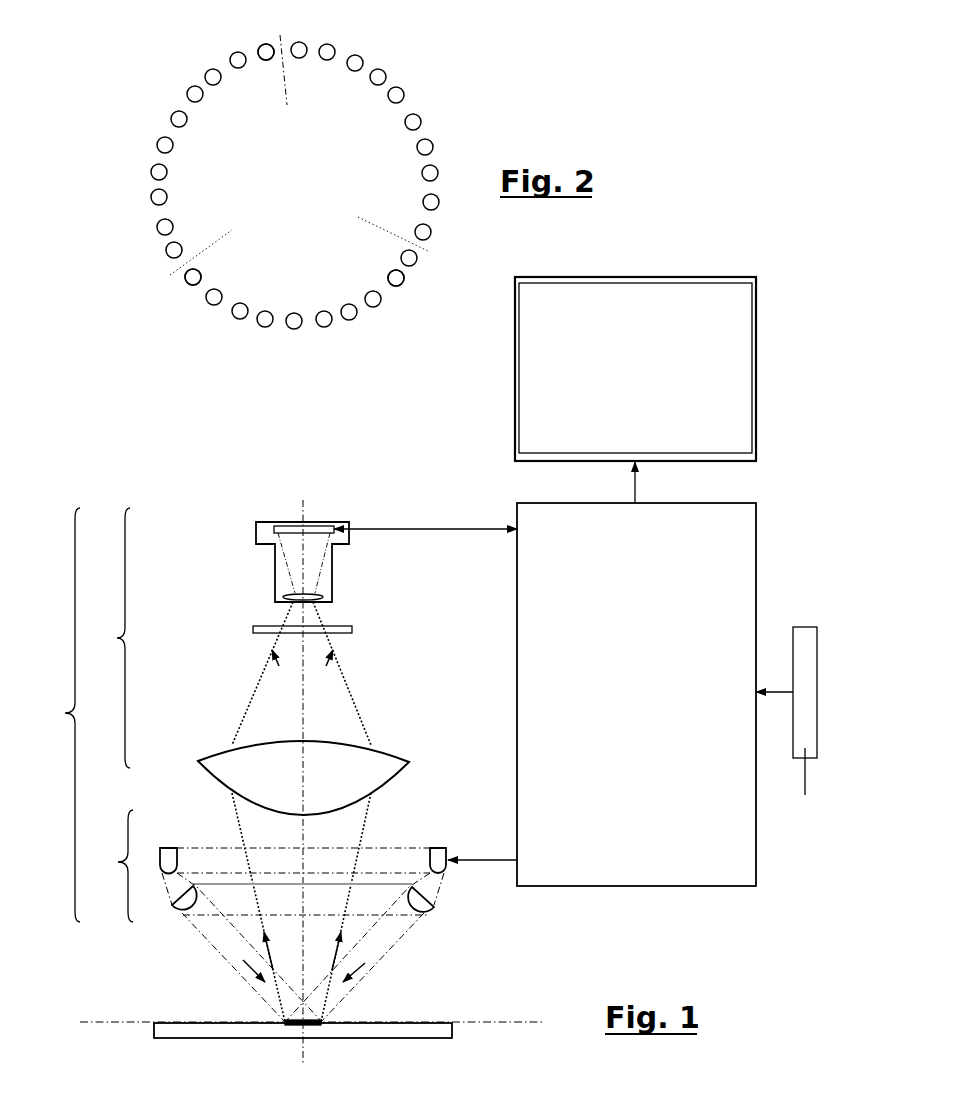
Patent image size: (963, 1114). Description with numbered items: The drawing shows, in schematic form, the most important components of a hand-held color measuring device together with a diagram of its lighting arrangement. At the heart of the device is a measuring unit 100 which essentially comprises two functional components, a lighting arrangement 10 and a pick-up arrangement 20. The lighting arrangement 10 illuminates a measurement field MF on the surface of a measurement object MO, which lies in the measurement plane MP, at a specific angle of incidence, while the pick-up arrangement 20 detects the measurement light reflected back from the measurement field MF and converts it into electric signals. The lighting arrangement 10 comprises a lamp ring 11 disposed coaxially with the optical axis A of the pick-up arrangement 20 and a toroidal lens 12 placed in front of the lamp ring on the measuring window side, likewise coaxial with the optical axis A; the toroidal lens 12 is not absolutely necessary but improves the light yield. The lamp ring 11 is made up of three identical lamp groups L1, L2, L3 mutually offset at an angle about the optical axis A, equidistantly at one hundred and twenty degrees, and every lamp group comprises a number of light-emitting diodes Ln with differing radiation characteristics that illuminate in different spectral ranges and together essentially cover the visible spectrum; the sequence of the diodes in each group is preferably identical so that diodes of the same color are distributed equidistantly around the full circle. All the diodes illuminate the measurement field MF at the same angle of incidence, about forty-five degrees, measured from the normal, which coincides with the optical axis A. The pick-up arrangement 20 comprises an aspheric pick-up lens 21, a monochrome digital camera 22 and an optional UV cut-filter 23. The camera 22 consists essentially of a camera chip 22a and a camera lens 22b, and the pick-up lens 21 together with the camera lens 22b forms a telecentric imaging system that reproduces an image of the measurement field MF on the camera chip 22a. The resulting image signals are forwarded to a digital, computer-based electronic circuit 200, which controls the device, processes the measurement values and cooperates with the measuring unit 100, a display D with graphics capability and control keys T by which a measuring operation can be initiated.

In FIG. 1, the measuring unit 100 is at (48, 715).
In FIG. 1, the pick-up arrangement 20 is at (108, 638).
In FIG. 1, the lighting arrangement 10 is at (110, 866).
In FIG. 1, the digital camera 22 is at (332, 572).
In FIG. 1, the camera chip 22a is at (290, 530).
In FIG. 1, the camera lens 22b is at (297, 595).
In FIG. 1, the UV cut-filter 23 is at (343, 632).
In FIG. 1, the pick-up lens 21 is at (378, 763).
In FIG. 2, the lamp ring 11 is at (138, 238).
In FIG. 1, the lamp ring 11 is at (397, 858).
In FIG. 2, the light-emitting diodes Ln is at (172, 117).
In FIG. 1, the light-emitting diodes Ln is at (173, 852).
In FIG. 2, the first lamp group L1 is at (297, 63).
In FIG. 2, the second lamp group L2 is at (267, 68).
In FIG. 2, the third lamp group L3 is at (390, 253).
In FIG. 1, the toroidal lens 12 is at (425, 905).
In FIG. 1, the electronic circuit 200 is at (740, 565).
In FIG. 1, the display D is at (743, 432).
In FIG. 1, the control keys T is at (786, 731).
In FIG. 1, the measurement plane MP is at (120, 1020).
In FIG. 1, the measurement object MO is at (197, 1032).
In FIG. 1, the measurement field MF is at (308, 1025).
In FIG. 1, the optical axis A is at (302, 1055).